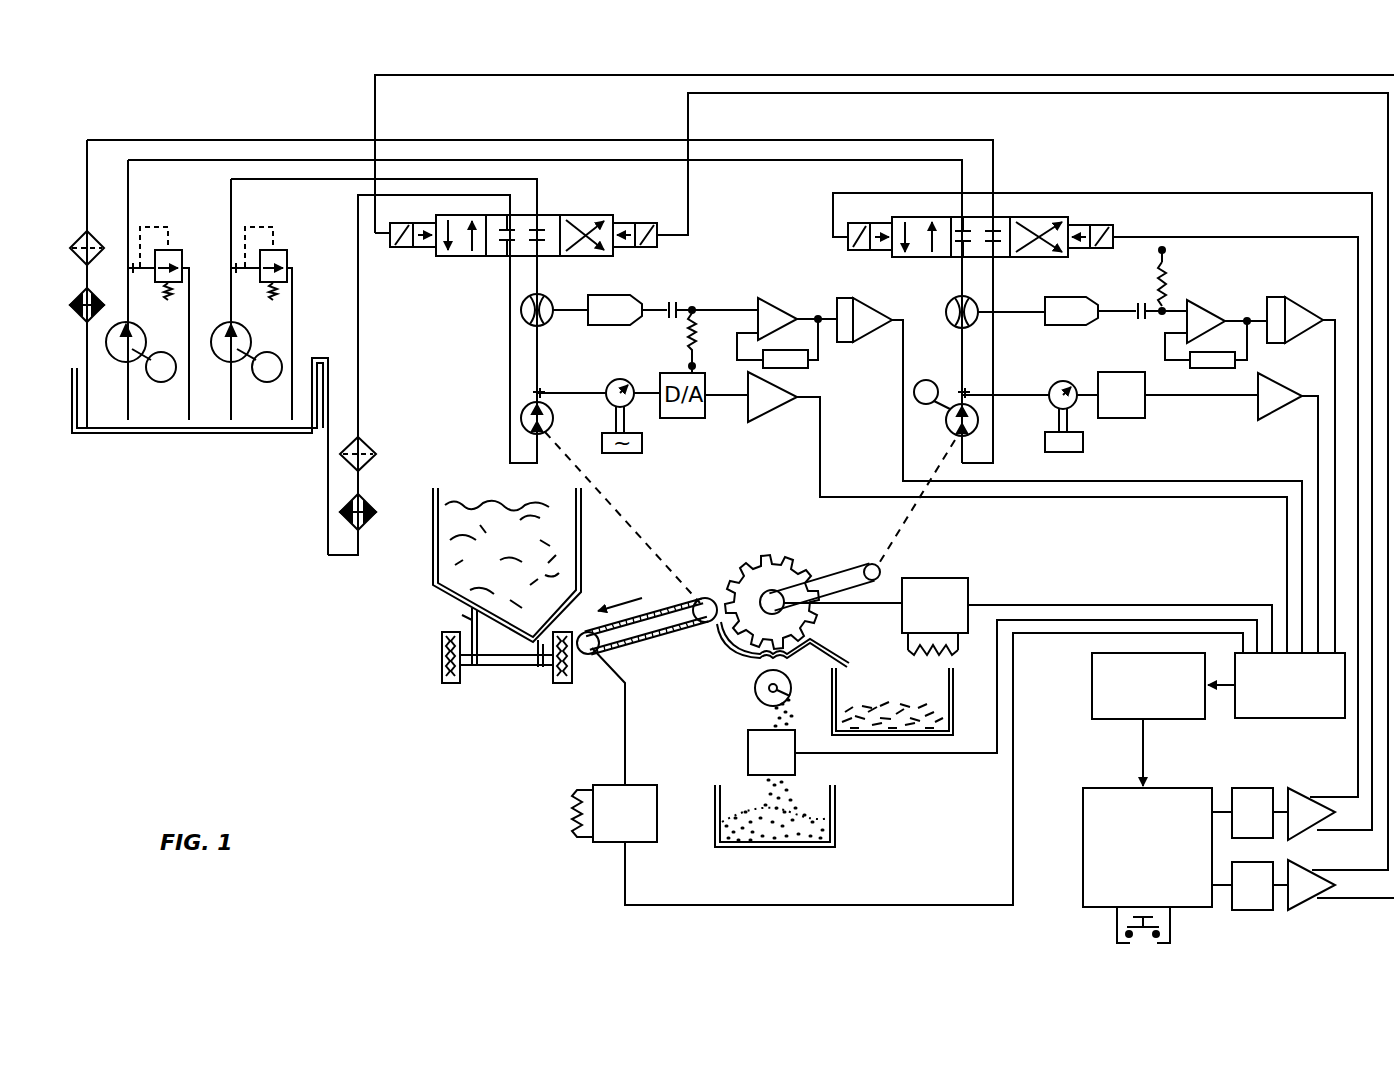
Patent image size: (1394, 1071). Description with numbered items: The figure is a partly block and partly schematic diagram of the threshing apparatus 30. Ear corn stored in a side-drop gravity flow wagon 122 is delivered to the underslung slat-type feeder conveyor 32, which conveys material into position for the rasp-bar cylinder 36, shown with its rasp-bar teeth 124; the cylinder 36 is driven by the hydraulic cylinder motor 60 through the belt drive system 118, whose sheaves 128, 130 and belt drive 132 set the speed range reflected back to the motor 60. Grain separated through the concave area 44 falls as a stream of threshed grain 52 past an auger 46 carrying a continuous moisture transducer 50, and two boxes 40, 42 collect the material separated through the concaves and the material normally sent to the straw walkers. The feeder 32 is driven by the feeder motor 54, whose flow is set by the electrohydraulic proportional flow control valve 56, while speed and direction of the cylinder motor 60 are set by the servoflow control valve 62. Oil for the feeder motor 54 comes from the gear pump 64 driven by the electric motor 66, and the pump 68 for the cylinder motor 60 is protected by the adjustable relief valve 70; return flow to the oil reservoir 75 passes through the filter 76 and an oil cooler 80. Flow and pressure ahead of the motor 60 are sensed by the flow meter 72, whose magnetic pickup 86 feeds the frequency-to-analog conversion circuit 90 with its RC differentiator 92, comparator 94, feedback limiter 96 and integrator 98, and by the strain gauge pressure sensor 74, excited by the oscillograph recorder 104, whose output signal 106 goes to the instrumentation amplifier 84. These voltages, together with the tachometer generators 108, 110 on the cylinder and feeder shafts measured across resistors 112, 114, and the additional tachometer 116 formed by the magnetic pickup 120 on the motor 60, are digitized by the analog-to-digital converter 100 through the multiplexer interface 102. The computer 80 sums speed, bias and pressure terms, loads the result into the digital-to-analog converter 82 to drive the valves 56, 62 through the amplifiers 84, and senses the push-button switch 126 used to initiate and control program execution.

The threshing apparatus 30 is at (352, 658).
The feeder conveyor 32 is at (630, 596).
The rasp-bar cylinder 36 is at (764, 545).
The box 40 is at (713, 800).
The box 42 is at (953, 708).
The concave area 44 is at (806, 656).
The auger 46 is at (755, 687).
The continuous moisture transducer 50 is at (747, 752).
The threshed grain 52 is at (767, 716).
The feeder motor 54 is at (554, 418).
The electrohydraulic proportional flow control valve 56 is at (478, 262).
The cylinder motor 60 is at (950, 431).
The electrohydraulic servoflow control valve 62 is at (926, 262).
The gear pump 64 is at (248, 334).
The electric motor 66 is at (263, 381).
The pump 68 is at (143, 334).
The adjustable relief valve 70 is at (170, 250).
The flow meter 72 is at (950, 325).
The pressure sensor 74 is at (1051, 389).
The oil reservoir 75 is at (213, 417).
The filter 76 is at (70, 250).
The computer 80 is at (80, 322).
The digital-to-analog converter 82 is at (1133, 418).
The instrumentation amplifier 84 is at (1281, 422).
The magnetic pickup 86 is at (980, 329).
The frequency-to-analog voltage conversion circuit 90 is at (1091, 292).
The RC differentiator 92 is at (1175, 292).
The comparator 94 is at (1211, 305).
The feedback limiter 96 is at (1223, 371).
The integrator 98 is at (1306, 307).
The analog-to-digital converter 100 is at (1281, 722).
The multiplexer interface 102 is at (1092, 685).
The oscillograph recorder 104 is at (1037, 421).
The output signal 106 is at (1086, 381).
The tachometer generator 108 is at (964, 578).
The tachometer generator 110 is at (596, 772).
The resistor 112 is at (916, 657).
The resistor 114 is at (573, 816).
The tachometer 116 is at (940, 383).
The belt drive system 118 is at (834, 568).
The magnetic pickup 120 is at (948, 419).
The gravity flow wagon 122 is at (443, 601).
The wheel teeth 124 is at (738, 578).
The push-button switch 126 is at (1108, 931).
The sheave 128 is at (872, 563).
The sheave 130 is at (772, 602).
The belt drive 132 is at (852, 603).